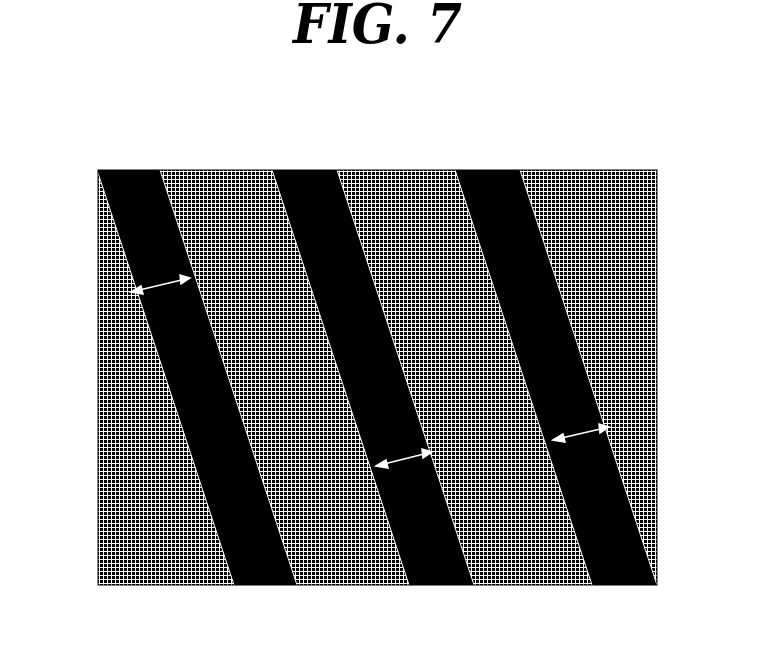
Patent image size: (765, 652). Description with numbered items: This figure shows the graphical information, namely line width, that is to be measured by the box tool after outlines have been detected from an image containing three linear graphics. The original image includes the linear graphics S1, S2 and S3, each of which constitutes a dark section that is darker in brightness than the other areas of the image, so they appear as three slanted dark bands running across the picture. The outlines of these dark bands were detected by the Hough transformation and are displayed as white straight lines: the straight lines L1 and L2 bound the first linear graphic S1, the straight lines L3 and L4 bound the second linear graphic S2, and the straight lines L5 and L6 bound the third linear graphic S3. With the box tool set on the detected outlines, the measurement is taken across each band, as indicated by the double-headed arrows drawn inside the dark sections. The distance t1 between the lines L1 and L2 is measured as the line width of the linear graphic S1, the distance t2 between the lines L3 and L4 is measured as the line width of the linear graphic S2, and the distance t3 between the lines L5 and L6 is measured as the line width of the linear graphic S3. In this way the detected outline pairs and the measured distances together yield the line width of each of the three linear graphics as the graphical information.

The straight line L1 is at (100, 250).
The straight line L2 is at (177, 170).
The straight line L3 is at (251, 170).
The straight line L4 is at (357, 170).
The straight line L5 is at (432, 170).
The straight line L6 is at (541, 170).
The linear graphic S1 is at (115, 170).
The linear graphic S2 is at (300, 170).
The linear graphic S3 is at (480, 170).
The distance t1 is at (99, 359).
The distance t2 is at (365, 586).
The distance t3 is at (657, 497).